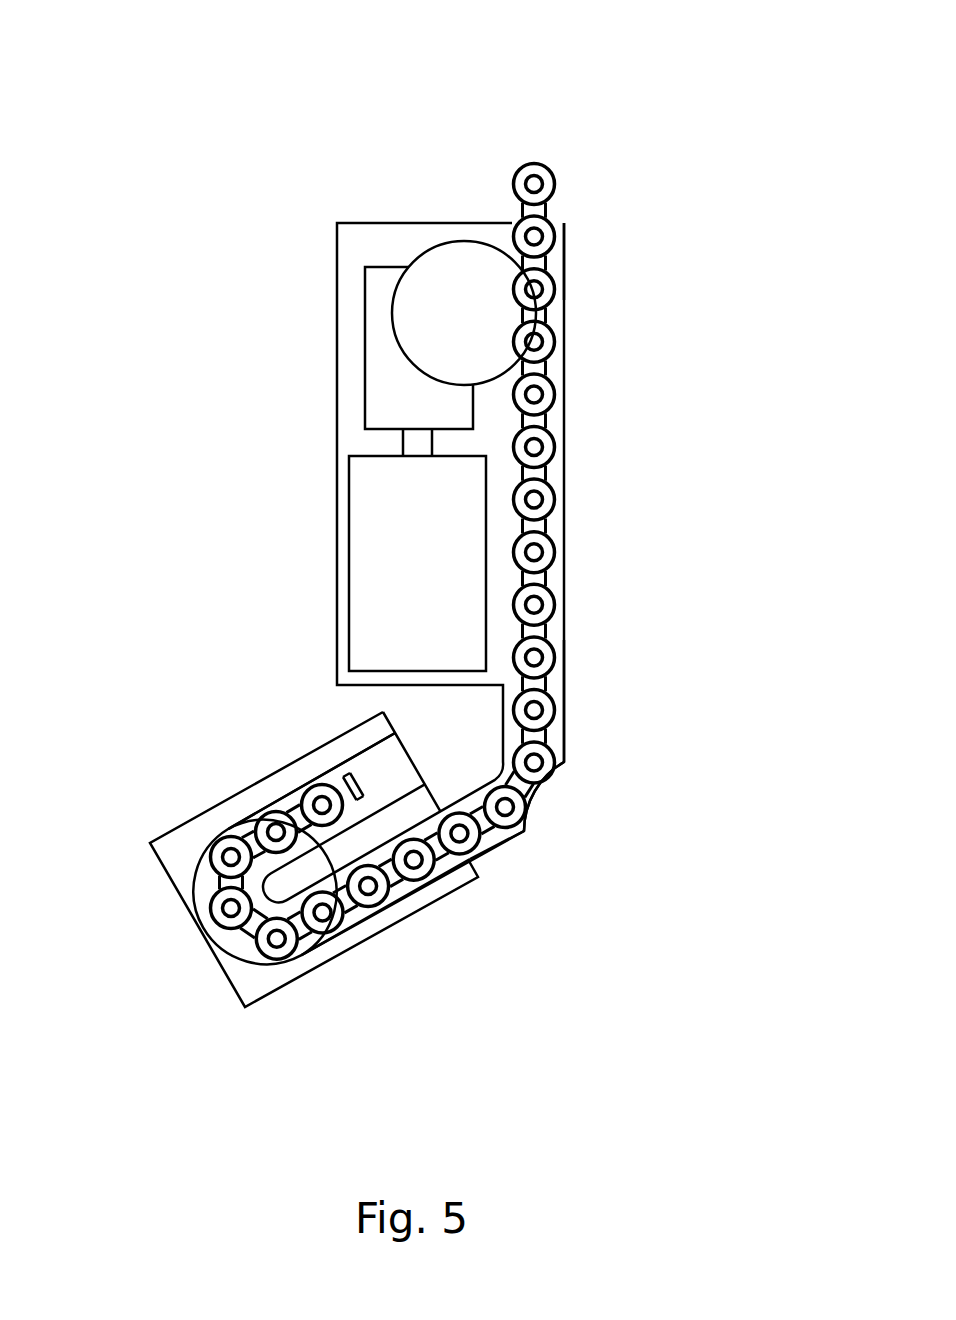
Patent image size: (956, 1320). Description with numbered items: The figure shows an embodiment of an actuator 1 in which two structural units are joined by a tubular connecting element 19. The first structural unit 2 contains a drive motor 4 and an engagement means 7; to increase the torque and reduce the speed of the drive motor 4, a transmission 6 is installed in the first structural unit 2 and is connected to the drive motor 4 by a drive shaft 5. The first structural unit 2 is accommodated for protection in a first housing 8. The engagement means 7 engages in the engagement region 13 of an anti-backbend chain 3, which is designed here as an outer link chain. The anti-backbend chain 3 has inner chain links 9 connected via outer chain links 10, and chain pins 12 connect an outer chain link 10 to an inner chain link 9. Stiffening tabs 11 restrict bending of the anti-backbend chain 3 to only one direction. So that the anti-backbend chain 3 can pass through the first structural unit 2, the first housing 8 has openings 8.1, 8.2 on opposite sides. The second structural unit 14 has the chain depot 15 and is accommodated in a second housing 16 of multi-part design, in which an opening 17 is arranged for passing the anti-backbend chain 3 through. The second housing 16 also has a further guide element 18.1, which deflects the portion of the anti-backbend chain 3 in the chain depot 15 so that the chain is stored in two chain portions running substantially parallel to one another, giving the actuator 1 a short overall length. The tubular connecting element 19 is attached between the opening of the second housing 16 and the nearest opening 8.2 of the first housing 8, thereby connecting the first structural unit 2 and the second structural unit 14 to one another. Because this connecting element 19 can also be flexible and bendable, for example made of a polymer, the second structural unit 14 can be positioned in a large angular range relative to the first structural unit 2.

The actuator 1 is at (451, 14).
The first structural unit 2 is at (330, 272).
The anti-backbend chain 3 is at (448, 593).
The drive motor 4 is at (417, 563).
The drive shaft 5 is at (417, 443).
The transmission 6 is at (419, 348).
The engagement means 7 is at (464, 313).
The first housing 8 is at (335, 646).
The opening 8.1 is at (563, 226).
The opening 8.2 is at (556, 684).
The inner chain link 9 is at (533, 370).
The outer chain link 10 is at (535, 421).
The stiffening tab 11 is at (558, 450).
The chain pin 12 is at (557, 508).
The engagement region 13 is at (530, 315).
The second structural unit 14 is at (270, 859).
The chain depot 15 is at (373, 777).
The second housing 16 is at (232, 798).
The opening 17 is at (471, 859).
The further guide element 18.1 is at (292, 972).
The tubular connecting element 19 is at (548, 809).